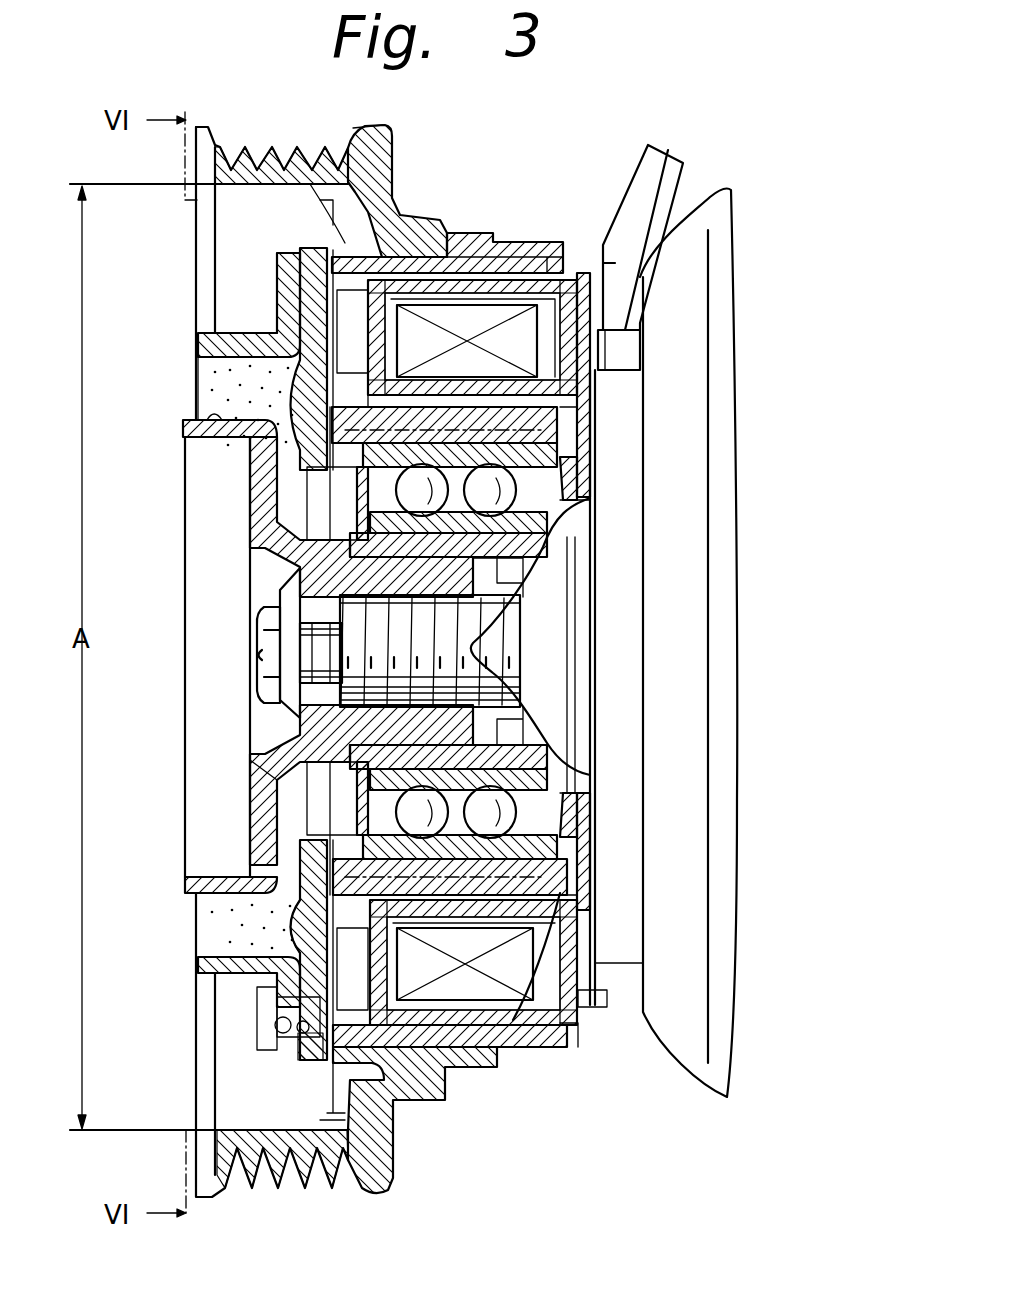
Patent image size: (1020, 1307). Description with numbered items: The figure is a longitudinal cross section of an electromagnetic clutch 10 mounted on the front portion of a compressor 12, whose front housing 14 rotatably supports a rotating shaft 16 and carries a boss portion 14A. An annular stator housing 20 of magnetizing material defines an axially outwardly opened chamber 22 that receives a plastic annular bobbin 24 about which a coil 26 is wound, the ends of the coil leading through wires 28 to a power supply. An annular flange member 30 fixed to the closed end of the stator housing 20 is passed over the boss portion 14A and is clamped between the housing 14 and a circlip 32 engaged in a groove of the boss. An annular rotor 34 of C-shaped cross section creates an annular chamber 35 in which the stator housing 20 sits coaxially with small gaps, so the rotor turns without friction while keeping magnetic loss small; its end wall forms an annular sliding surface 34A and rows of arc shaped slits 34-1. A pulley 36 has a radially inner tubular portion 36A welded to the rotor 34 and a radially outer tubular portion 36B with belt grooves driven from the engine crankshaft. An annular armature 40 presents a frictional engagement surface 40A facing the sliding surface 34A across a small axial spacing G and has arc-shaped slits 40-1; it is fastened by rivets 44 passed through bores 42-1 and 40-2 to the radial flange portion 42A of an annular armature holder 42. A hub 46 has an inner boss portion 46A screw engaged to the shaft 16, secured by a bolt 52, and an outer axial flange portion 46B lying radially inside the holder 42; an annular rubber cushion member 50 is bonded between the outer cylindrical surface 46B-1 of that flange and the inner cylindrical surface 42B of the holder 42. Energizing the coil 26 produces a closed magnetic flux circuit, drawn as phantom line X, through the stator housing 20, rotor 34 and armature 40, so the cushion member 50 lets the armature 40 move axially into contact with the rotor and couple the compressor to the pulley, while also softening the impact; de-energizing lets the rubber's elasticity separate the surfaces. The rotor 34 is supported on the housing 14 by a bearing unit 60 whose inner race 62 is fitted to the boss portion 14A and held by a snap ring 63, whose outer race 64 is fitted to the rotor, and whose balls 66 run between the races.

The electromagnetic clutch 10 is at (436, 1126).
The compressor 12 is at (649, 1118).
The front housing 14 is at (627, 518).
The boss portion 14A is at (600, 490).
The rotating shaft 16 is at (517, 603).
The annular stator housing 20 is at (500, 258).
The chamber 22 is at (485, 302).
The annular bobbin 24 is at (383, 300).
The coil 26 is at (463, 318).
The wires 28 is at (640, 188).
The annular flange member 30 is at (600, 417).
The circlip 32 is at (600, 453).
The annular rotor 34 is at (500, 292).
The annular sliding surface 34A is at (312, 182).
The arc shaped slits 34-1 is at (250, 468).
The annular chamber 35 is at (543, 248).
The pulley 36 is at (383, 87).
The radially inner tubular portion 36A is at (477, 298).
The radially outer tubular portion 36B is at (433, 226).
The armature 40 is at (327, 253).
The frictional engagement surface 40A is at (327, 252).
The arc-shaped slits 40-1 is at (298, 950).
The bores 40-2 is at (305, 1062).
The annular armature holder 42 is at (245, 345).
The radial flange portion 42A is at (277, 268).
The inner cylindrical surface 42B is at (222, 362).
The bores 42-1 is at (300, 1057).
The rivets 44 is at (262, 1025).
The hub 46 is at (260, 508).
The inner boss portion 46A is at (257, 785).
The outer axial flange portion 46B is at (175, 437).
The outer cylindrical surface 46B-1 is at (218, 422).
The annular cushion member 50 is at (217, 393).
The bolt 52 is at (265, 660).
The bearing unit 60 is at (586, 651).
The inner race 62 is at (520, 773).
The snap ring 63 is at (362, 790).
The outer race 64 is at (520, 850).
The balls 66 is at (503, 810).
The phantom line X is at (547, 252).
The axial spacing G is at (323, 1113).